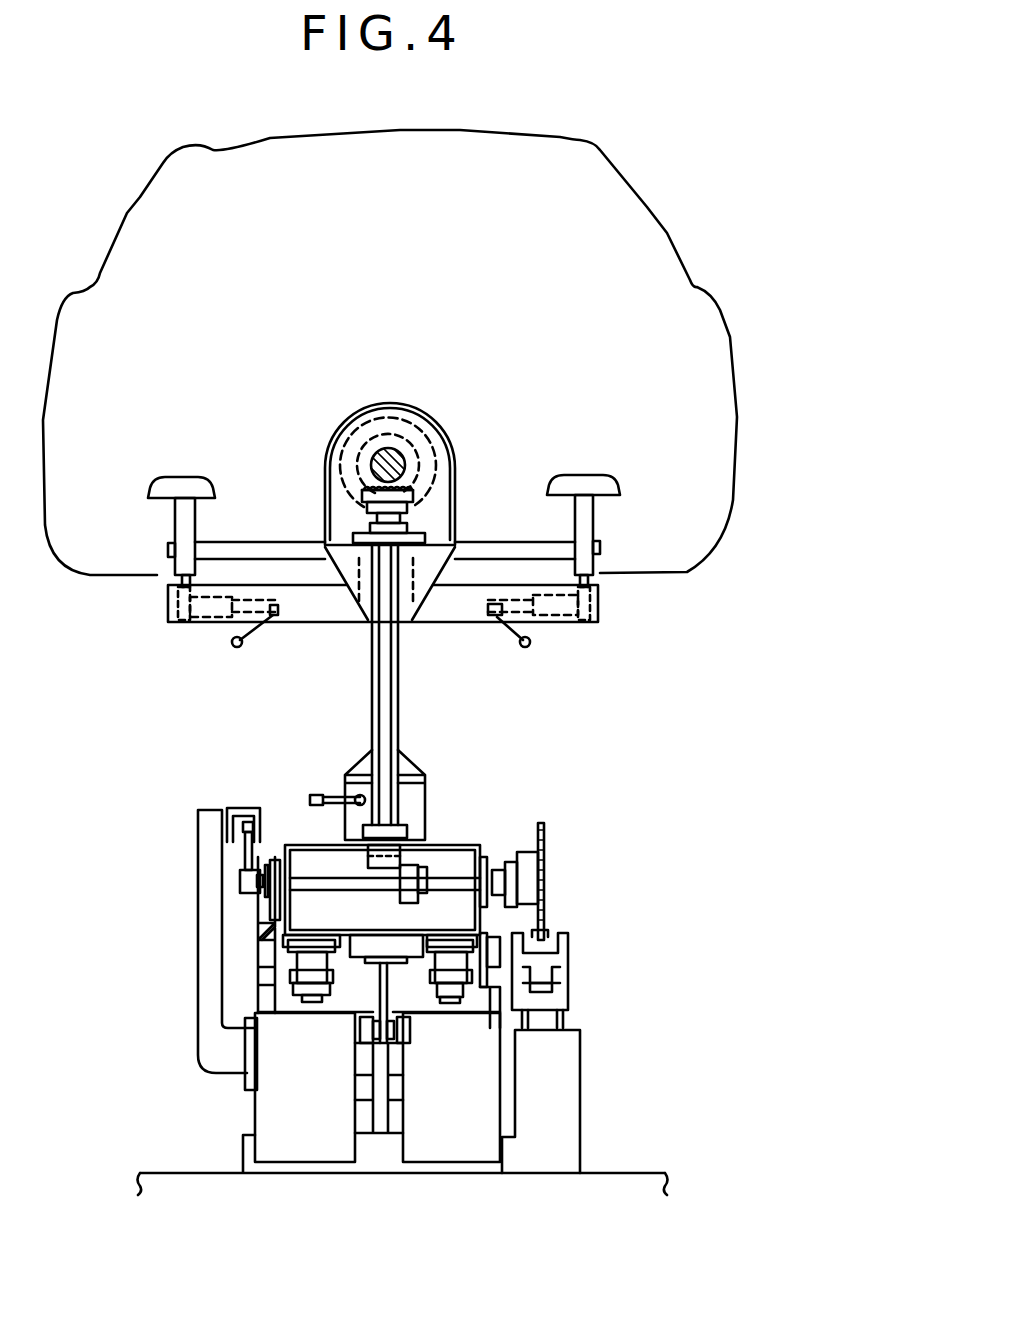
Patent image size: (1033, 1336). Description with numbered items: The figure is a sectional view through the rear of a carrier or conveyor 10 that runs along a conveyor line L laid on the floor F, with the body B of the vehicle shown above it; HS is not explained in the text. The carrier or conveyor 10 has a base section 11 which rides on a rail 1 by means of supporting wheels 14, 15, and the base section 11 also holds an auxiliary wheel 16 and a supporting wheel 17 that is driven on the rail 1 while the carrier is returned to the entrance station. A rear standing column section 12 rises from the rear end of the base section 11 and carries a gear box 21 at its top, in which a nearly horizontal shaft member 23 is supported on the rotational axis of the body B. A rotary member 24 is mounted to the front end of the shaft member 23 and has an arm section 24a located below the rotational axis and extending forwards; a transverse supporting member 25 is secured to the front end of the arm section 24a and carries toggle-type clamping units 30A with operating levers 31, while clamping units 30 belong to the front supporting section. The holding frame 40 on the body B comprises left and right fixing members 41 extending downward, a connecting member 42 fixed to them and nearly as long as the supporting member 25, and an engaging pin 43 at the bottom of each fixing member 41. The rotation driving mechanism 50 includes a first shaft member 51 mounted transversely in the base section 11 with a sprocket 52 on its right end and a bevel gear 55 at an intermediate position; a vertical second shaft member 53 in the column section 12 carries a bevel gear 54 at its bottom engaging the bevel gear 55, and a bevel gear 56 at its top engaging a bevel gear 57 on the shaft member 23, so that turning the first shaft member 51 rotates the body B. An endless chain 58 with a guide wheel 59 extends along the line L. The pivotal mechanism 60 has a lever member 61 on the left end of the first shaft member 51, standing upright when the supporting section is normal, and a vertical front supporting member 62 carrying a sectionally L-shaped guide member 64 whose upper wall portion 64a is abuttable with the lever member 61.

The body of the vehicle B is at (668, 230).
The holder system HS is at (745, 635).
The carrier or conveyor 10 is at (675, 823).
The holding frame 40 is at (618, 468).
The fixing members 41 is at (175, 528).
The connecting member 42 is at (260, 546).
The engaging pin 43 is at (600, 551).
The gear box 21 is at (447, 445).
The bevel gear 57 is at (365, 452).
The shaft member 23 is at (397, 452).
The bevel gear 56 is at (420, 505).
The rotary member 24 is at (445, 560).
The arm section 24a is at (420, 622).
The supporting member 25 is at (305, 622).
The clamping units 30A is at (222, 620).
The operating lever 31 is at (248, 652).
The rear standing column section 12 is at (400, 698).
The second shaft member 53 is at (385, 737).
The bevel gear 54 is at (405, 845).
The clamping unit 30 is at (353, 805).
The rotation driving mechanism 50 is at (476, 788).
The first shaft member 51 is at (307, 893).
The bevel gear 55 is at (412, 897).
The supporting wheel 15 is at (540, 907).
The sprocket 52 is at (544, 831).
The upper wall portion 64a is at (237, 817).
The guide member 64 is at (278, 825).
The front supporting member 62 is at (198, 828).
The lever member 61 is at (240, 847).
The supporting wheel 14 is at (263, 907).
The rail 1 is at (262, 928).
The endless chain 58 is at (563, 980).
The guide wheel 59 is at (540, 990).
The base section 11 is at (358, 950).
The supporting wheel 17 is at (313, 1003).
The auxiliary wheel 16 is at (410, 1032).
The conveyor line L is at (220, 1093).
The floor F is at (620, 1173).
The pivotal mechanism 60 is at (178, 793).